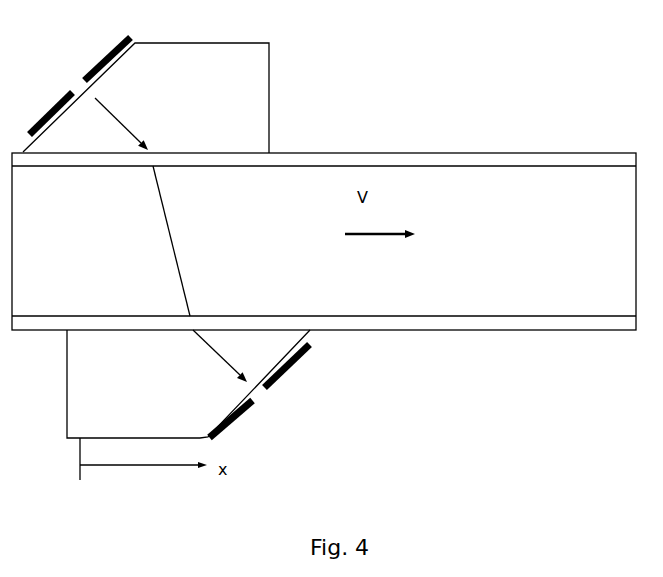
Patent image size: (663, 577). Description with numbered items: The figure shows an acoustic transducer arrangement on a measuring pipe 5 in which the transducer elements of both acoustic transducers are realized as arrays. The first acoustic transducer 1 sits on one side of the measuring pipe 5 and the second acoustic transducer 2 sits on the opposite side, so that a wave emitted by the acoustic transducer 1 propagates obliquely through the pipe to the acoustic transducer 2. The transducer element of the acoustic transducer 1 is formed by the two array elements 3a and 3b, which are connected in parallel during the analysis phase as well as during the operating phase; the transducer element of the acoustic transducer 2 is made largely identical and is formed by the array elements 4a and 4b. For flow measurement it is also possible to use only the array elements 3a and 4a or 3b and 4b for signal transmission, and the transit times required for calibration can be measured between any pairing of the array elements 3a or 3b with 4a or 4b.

The acoustic transducer 1 is at (146, 98).
The acoustic transducer 2 is at (188, 384).
The array element 3a is at (48, 114).
The array element 3b is at (98, 59).
The array element 4a is at (290, 366).
The array element 4b is at (242, 420).
The measuring pipe 5 is at (324, 231).